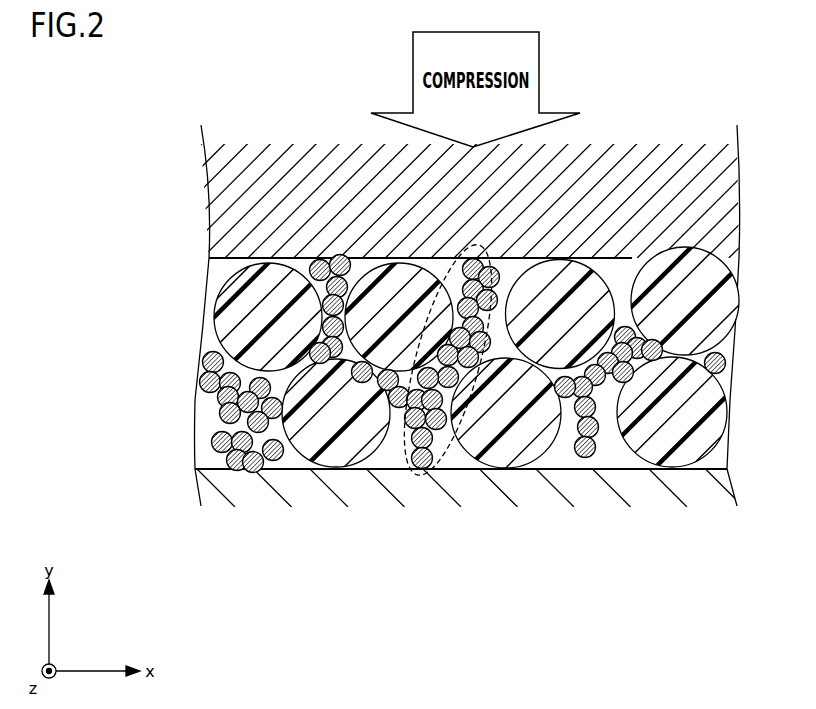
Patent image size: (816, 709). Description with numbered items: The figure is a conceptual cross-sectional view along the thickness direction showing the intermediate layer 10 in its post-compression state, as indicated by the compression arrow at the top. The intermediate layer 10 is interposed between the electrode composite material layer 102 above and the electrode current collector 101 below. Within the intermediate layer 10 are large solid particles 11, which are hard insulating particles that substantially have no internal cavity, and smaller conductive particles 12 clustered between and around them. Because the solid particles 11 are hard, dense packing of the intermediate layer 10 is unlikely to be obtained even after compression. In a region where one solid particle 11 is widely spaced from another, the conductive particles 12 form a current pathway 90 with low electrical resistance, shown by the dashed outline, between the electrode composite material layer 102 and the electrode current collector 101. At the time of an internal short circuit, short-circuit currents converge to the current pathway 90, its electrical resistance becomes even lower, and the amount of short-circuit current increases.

The intermediate layer 10 is at (134, 463).
The solid particle 11 is at (223, 317).
The conductive particle 12 is at (213, 410).
The current pathway 90 is at (440, 453).
The electrode current collector 101 is at (197, 492).
The electrode composite material layer 102 is at (208, 195).